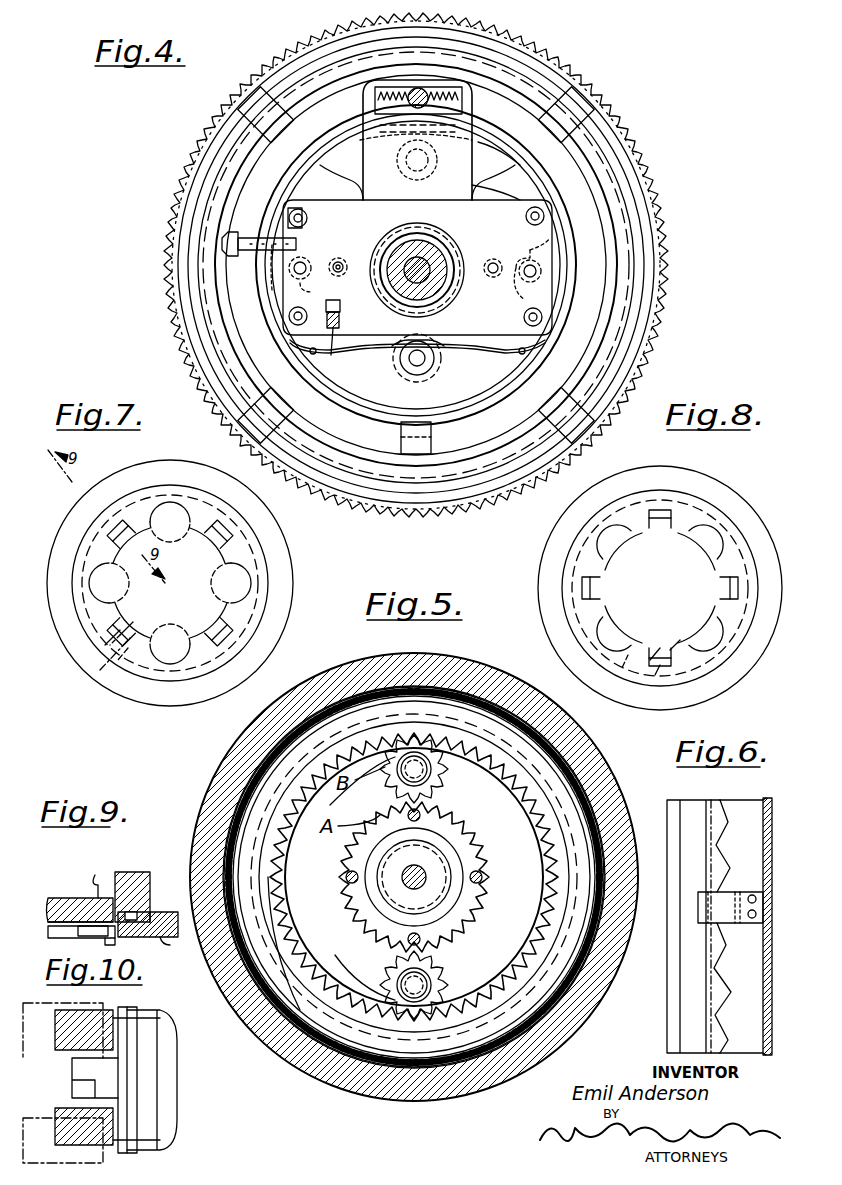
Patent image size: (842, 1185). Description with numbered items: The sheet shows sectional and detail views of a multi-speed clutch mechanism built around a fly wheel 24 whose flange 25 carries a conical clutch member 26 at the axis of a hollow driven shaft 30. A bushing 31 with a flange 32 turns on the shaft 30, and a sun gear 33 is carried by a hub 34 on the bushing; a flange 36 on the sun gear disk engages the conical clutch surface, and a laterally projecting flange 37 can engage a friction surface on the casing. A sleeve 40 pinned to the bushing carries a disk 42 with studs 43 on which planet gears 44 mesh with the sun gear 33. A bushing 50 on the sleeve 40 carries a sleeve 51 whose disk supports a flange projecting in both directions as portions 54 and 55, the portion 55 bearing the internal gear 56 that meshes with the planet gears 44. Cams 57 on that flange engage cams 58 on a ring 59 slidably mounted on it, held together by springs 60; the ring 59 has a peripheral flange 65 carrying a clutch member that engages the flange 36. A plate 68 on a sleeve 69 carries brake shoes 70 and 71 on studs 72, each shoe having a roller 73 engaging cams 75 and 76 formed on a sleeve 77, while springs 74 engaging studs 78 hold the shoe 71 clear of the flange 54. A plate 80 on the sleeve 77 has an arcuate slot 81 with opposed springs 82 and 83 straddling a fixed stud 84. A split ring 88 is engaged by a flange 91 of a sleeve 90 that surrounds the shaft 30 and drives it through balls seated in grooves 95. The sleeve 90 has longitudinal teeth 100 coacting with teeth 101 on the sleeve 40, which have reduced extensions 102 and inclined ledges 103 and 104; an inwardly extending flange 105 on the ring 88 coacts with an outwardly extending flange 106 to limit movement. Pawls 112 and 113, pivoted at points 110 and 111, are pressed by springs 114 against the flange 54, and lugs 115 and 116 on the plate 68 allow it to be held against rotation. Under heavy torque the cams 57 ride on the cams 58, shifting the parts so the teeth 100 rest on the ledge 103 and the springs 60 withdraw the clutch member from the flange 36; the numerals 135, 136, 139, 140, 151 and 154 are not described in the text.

In FIG. 4, the fly wheel 24 is at (195, 183).
In FIG. 5, the fly wheel 24 is at (230, 758).
In FIG. 5, the flange 25 is at (245, 732).
In FIG. 5, the conical clutch member 26 is at (335, 700).
In FIG. 4, the driven shaft 30 is at (445, 247).
In FIG. 5, the driven shaft 30 is at (440, 860).
In FIG. 4, the bushing 31 is at (450, 262).
In FIG. 5, the bushing 31 is at (450, 873).
In FIG. 5, the flange 32 is at (483, 878).
In FIG. 5, the sun gear 33 is at (338, 868).
In FIG. 5, the hub 34 is at (440, 825).
In FIG. 4, the flange 36 is at (282, 138).
In FIG. 4, the laterally projecting flange 37 is at (262, 130).
In FIG. 4, the sleeve 40 is at (448, 278).
In FIG. 7, the sleeve 40 is at (170, 583).
In FIG. 8, the sleeve 40 is at (647, 540).
In FIG. 9, the sleeve 40 is at (174, 954).
In FIG. 10, the sleeve 40 is at (172, 1092).
In FIG. 5, the disk 42 is at (325, 960).
In FIG. 5, the studs 43 is at (435, 776).
In FIG. 5, the planet gears 44 is at (385, 786).
In FIG. 4, the bushing 50 is at (392, 228).
In FIG. 4, the sleeve 51 is at (392, 218).
In FIG. 4, the flange portion 54 is at (537, 138).
In FIG. 6, the flange portion 54 is at (685, 996).
In FIG. 5, the flange portion 55 is at (560, 775).
In FIG. 6, the flange portion 55 is at (748, 1004).
In FIG. 5, the internal gear 56 is at (455, 740).
In FIG. 6, the cams 57 is at (712, 938).
In FIG. 6, the cams 58 is at (722, 870).
In FIG. 4, the ring 59 is at (600, 287).
In FIG. 6, the ring 59 is at (757, 826).
In FIG. 4, the springs 60 is at (560, 173).
In FIG. 6, the springs 60 is at (730, 896).
In FIG. 5, the peripherally extending flange 65 is at (482, 705).
In FIG. 6, the peripherally extending flange 65 is at (770, 963).
In FIG. 4, the plate 68 is at (482, 192).
In FIG. 4, the sleeve 69 is at (440, 212).
In FIG. 4, the brake shoe 70 is at (520, 160).
In FIG. 4, the brake shoe 71 is at (404, 400).
In FIG. 4, the studs 72 is at (290, 215).
In FIG. 4, the roller 73 is at (400, 158).
In FIG. 4, the springs 74 is at (362, 362).
In FIG. 4, the cam 75 is at (498, 120).
In FIG. 4, the cam 76 is at (396, 366).
In FIG. 4, the sleeve 77 is at (532, 284).
In FIG. 4, the studs 78 is at (417, 341).
In FIG. 4, the plate 80 is at (476, 150).
In FIG. 4, the arcuate slot 81 is at (445, 60).
In FIG. 4, the spring 82 is at (380, 92).
In FIG. 4, the spring 83 is at (465, 76).
In FIG. 4, the stud 84 is at (410, 92).
In FIG. 9, the split ring 88 is at (132, 872).
In FIG. 7, the sleeve 90 is at (248, 556).
In FIG. 8, the sleeve 90 is at (722, 556).
In FIG. 9, the sleeve 90 is at (58, 898).
In FIG. 7, the flange 91 is at (276, 527).
In FIG. 8, the flange 91 is at (725, 480).
In FIG. 9, the flange 91 is at (85, 872).
In FIG. 7, the grooves 95 is at (236, 580).
In FIG. 8, the grooves 95 is at (712, 530).
In FIG. 7, the teeth 100 is at (150, 622).
In FIG. 8, the teeth 100 is at (630, 640).
In FIG. 9, the teeth 100 is at (55, 940).
In FIG. 10, the teeth 100 is at (125, 1040).
In FIG. 7, the teeth 101 is at (135, 615).
In FIG. 8, the teeth 101 is at (672, 640).
In FIG. 9, the teeth 101 is at (112, 945).
In FIG. 10, the teeth 101 is at (122, 1062).
In FIG. 7, the reduced extensions 102 is at (138, 625).
In FIG. 8, the reduced extensions 102 is at (660, 640).
In FIG. 9, the reduced extensions 102 is at (90, 938).
In FIG. 10, the reduced extensions 102 is at (80, 1082).
In FIG. 7, the ledge 103 is at (140, 628).
In FIG. 8, the ledge 103 is at (666, 660).
In FIG. 10, the ledge 103 is at (75, 1062).
In FIG. 7, the ledge 104 is at (125, 625).
In FIG. 8, the ledge 104 is at (630, 660).
In FIG. 9, the ledge 104 is at (55, 926).
In FIG. 10, the ledge 104 is at (105, 1103).
In FIG. 9, the inwardly extending flange 105 is at (140, 912).
In FIG. 9, the outwardly extending flange 106 is at (146, 895).
In FIG. 10, the outwardly extending flange 106 is at (130, 1082).
In FIG. 4, the pivot point 110 is at (292, 270).
In FIG. 4, the pivot point 111 is at (542, 268).
In FIG. 4, the pawl 112 is at (275, 290).
In FIG. 4, the pawl 113 is at (540, 270).
In FIG. 4, the springs 114 is at (296, 290).
In FIG. 4, the lug 115 is at (346, 309).
In FIG. 4, the lug 116 is at (296, 224).
In FIG. 4, the pin 135 is at (337, 261).
In FIG. 4, the pin 136 is at (423, 258).
In FIG. 4, the pin boss 139 is at (423, 277).
In FIG. 4, the lever 140 is at (339, 348).
In FIG. 4, the pin 151 is at (260, 250).
In FIG. 4, the pin head 154 is at (228, 240).